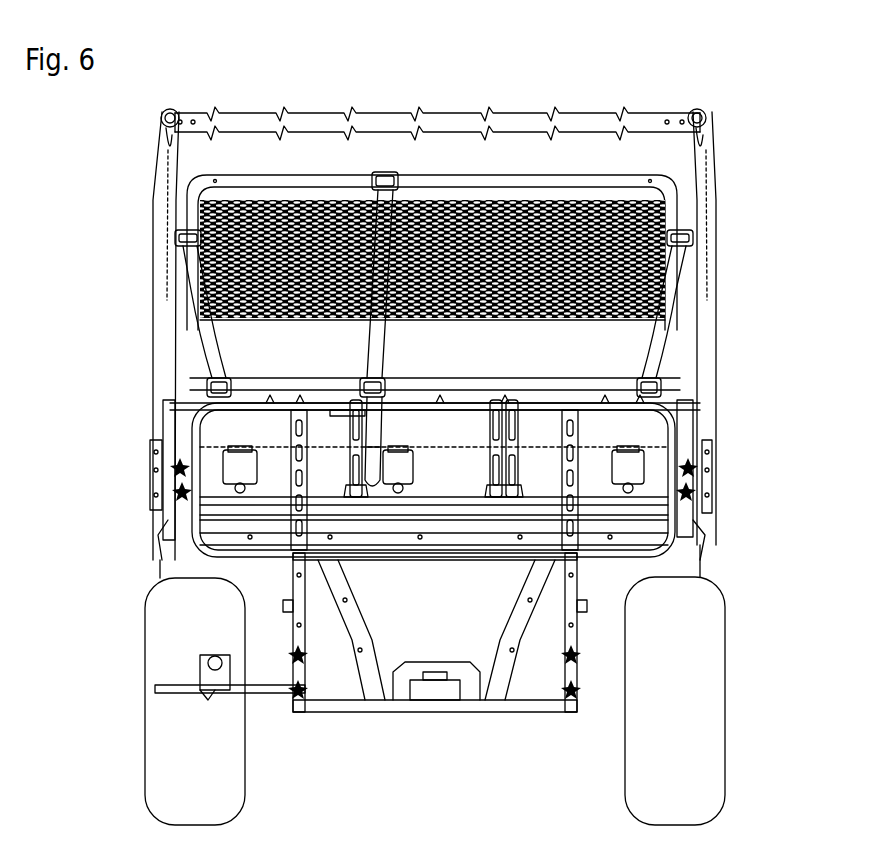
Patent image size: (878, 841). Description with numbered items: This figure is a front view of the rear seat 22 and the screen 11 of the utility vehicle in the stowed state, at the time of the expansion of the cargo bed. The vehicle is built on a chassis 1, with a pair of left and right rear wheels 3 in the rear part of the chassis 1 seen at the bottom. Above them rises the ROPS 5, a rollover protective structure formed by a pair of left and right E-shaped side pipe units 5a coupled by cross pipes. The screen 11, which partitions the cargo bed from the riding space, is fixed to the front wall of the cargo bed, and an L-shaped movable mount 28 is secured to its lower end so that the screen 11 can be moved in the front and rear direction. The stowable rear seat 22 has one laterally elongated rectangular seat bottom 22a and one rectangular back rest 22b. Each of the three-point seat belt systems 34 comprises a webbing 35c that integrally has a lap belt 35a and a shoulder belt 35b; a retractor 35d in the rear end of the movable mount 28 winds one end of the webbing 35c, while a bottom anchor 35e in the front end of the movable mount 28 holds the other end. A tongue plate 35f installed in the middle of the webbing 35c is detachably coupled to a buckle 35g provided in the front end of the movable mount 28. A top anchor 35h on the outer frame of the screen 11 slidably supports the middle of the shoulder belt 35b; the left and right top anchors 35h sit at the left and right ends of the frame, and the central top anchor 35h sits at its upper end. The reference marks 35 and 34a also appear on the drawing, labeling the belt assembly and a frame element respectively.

The chassis 1 is at (448, 708).
The rear wheels 3 is at (215, 787).
The ROPS 5 is at (208, 112).
The side pipe units 5a is at (165, 188).
The screen 11 is at (352, 178).
The rear seat 22 is at (603, 562).
The seat bottom 22a is at (696, 524).
The back rest 22b is at (543, 394).
The movable mount 28 is at (437, 547).
The three-point seat belt systems 34 is at (438, 205).
The center plate 34a is at (387, 421).
The seat belt assembly 35 is at (43, 378).
The lap belt 35a is at (215, 443).
The shoulder belt 35b is at (205, 340).
The webbing 35c is at (378, 341).
The retractor 35d is at (238, 470).
The bottom anchor 35e is at (207, 495).
The tongue plate 35f is at (256, 373).
The buckle 35g is at (358, 420).
The top anchor 35h is at (385, 172).